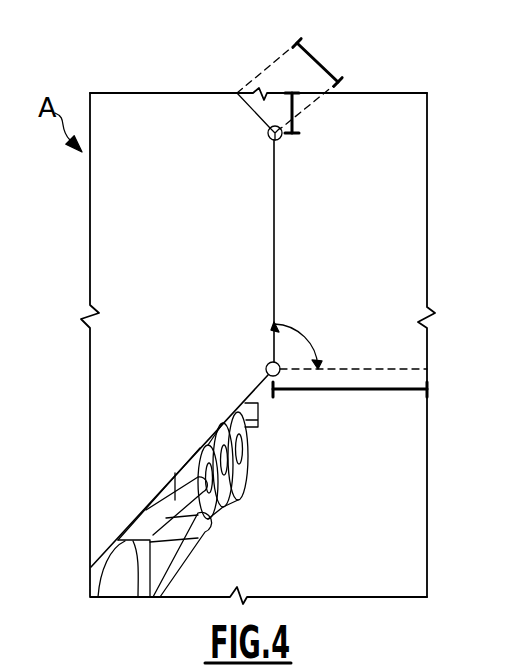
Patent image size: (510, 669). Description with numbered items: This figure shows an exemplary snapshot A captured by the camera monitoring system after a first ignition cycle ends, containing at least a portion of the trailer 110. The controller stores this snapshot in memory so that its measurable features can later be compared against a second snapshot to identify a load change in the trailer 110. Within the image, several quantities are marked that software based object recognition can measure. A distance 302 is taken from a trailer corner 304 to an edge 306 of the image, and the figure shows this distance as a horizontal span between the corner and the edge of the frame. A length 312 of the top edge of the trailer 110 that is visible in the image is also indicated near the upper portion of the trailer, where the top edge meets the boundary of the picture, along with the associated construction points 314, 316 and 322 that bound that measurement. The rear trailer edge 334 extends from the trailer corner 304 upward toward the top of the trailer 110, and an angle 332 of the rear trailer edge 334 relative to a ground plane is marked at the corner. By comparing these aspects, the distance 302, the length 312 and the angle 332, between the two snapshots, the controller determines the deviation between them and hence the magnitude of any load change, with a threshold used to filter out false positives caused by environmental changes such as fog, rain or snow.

The trailer 110 is at (197, 268).
The distance 302 is at (361, 390).
The trailer corner 304 is at (264, 366).
The edge of the image 306 is at (427, 253).
The length of the top edge of the trailer 312 is at (293, 104).
The upper joint 314 is at (267, 140).
The top reference edge 316 is at (402, 93).
The strut length 322 is at (318, 63).
The angle 332 is at (308, 340).
The rear trailer edge 334 is at (275, 232).